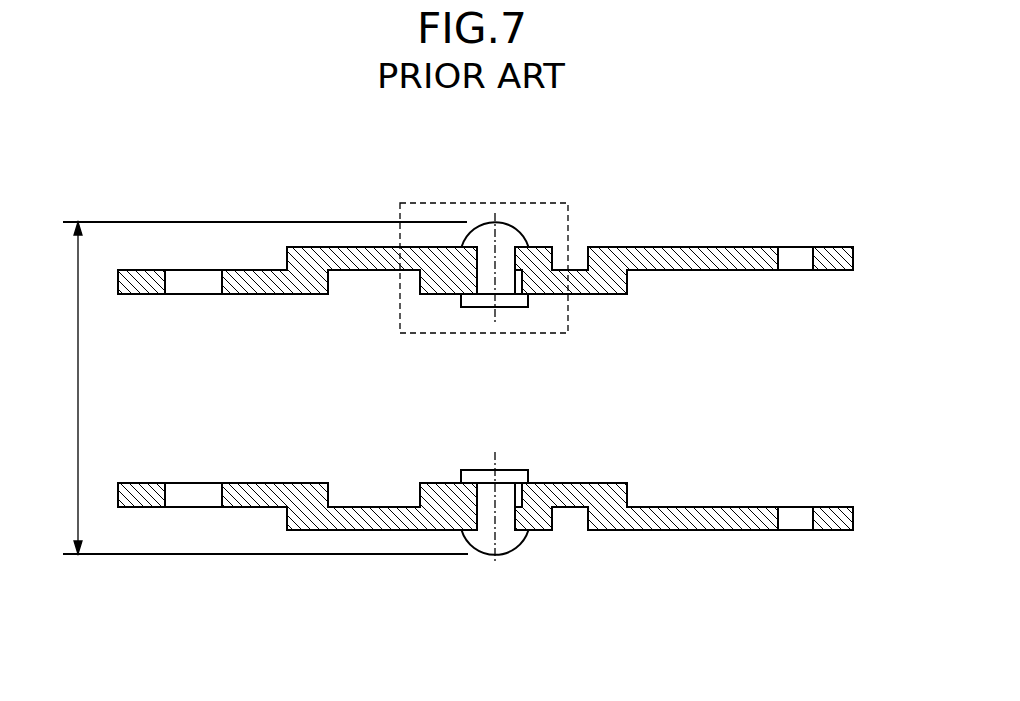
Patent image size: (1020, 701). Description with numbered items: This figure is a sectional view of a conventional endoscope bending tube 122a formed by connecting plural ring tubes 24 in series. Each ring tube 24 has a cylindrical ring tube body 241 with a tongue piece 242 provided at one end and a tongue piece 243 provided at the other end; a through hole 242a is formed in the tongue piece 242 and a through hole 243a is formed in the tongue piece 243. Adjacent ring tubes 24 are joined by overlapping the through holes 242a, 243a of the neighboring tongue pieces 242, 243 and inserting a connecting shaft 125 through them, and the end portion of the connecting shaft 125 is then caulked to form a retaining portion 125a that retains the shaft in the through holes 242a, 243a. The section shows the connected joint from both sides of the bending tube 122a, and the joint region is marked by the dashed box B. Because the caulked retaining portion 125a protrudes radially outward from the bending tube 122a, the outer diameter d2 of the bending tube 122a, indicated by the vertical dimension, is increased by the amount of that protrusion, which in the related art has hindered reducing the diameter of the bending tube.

The bending tube 122a is at (124, 188).
The ring tube 24 is at (314, 206).
The connecting shaft 125 is at (545, 383).
The retaining portion 125a is at (527, 232).
The ring tube body 241 is at (365, 272).
The tongue piece 242 is at (542, 247).
The through hole 242a is at (482, 246).
The tongue piece 243 is at (143, 294).
The through hole 243a is at (219, 280).
The region B is at (415, 203).
The outer diameter d2 is at (64, 388).